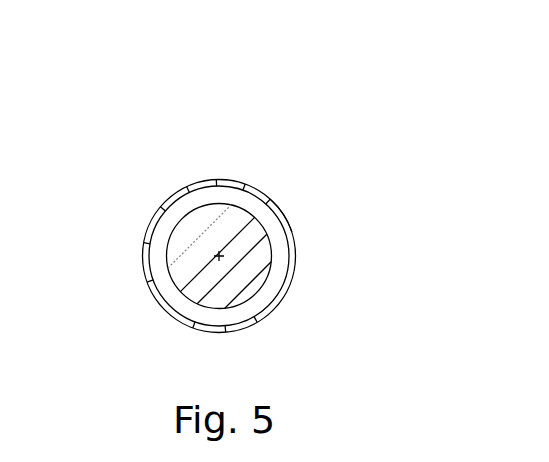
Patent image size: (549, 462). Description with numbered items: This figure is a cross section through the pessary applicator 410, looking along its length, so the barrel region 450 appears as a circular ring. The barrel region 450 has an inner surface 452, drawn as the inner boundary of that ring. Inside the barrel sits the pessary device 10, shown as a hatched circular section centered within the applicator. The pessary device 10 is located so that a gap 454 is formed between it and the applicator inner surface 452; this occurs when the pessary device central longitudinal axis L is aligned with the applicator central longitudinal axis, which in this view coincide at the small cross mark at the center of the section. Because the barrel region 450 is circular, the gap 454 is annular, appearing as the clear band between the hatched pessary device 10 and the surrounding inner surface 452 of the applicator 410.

The applicator 410 is at (137, 177).
The barrel region 450 is at (143, 258).
The inner surface 452 is at (292, 232).
The gap 454 is at (233, 200).
The pessary device 10 is at (260, 288).
The central longitudinal axis L is at (220, 257).